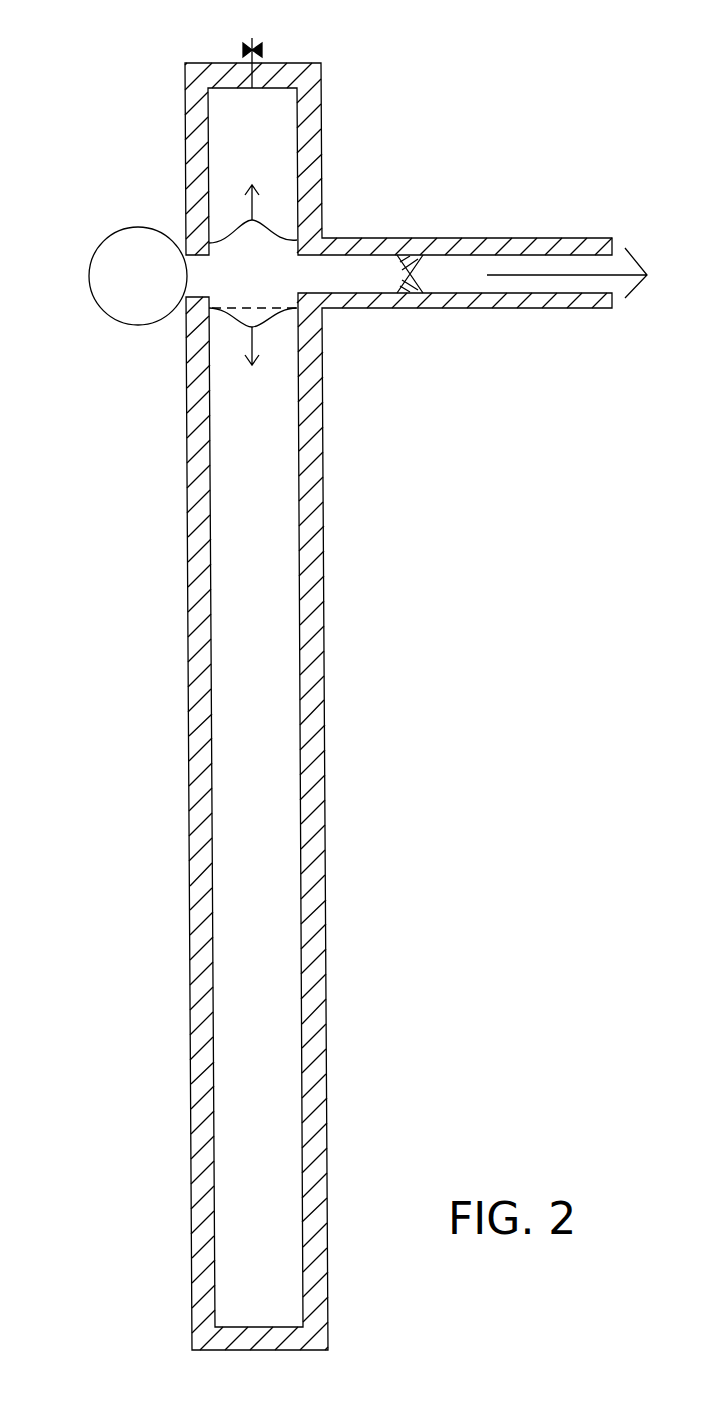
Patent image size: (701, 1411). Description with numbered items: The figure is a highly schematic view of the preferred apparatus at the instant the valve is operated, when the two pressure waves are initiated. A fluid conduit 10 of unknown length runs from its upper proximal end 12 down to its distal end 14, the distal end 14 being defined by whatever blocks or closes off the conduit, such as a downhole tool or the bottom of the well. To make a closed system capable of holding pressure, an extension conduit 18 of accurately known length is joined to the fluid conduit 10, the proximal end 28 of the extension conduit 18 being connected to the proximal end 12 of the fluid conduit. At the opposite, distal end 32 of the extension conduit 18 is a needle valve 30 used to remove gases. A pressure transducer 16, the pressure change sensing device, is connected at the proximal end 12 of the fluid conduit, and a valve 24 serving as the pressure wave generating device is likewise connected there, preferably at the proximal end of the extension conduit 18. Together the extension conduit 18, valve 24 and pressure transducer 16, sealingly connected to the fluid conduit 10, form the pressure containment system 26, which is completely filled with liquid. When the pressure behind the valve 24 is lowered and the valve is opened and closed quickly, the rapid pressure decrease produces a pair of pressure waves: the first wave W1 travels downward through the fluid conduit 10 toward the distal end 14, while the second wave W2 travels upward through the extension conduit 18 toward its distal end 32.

The fluid conduit 10 is at (318, 803).
The proximal end of the fluid conduit 12 is at (320, 310).
The distal end of the fluid conduit 14 is at (265, 1325).
The pressure transducer 16 is at (108, 258).
The extension conduit 18 is at (313, 133).
The valve 24 is at (410, 280).
The pressure containment system 26 is at (148, 485).
The proximal end of the extension conduit 28 is at (330, 290).
The needle valve 30 is at (243, 50).
The distal end of the extension conduit 32 is at (270, 87).
The first pressure wave W1 is at (212, 312).
The second pressure wave W2 is at (222, 232).